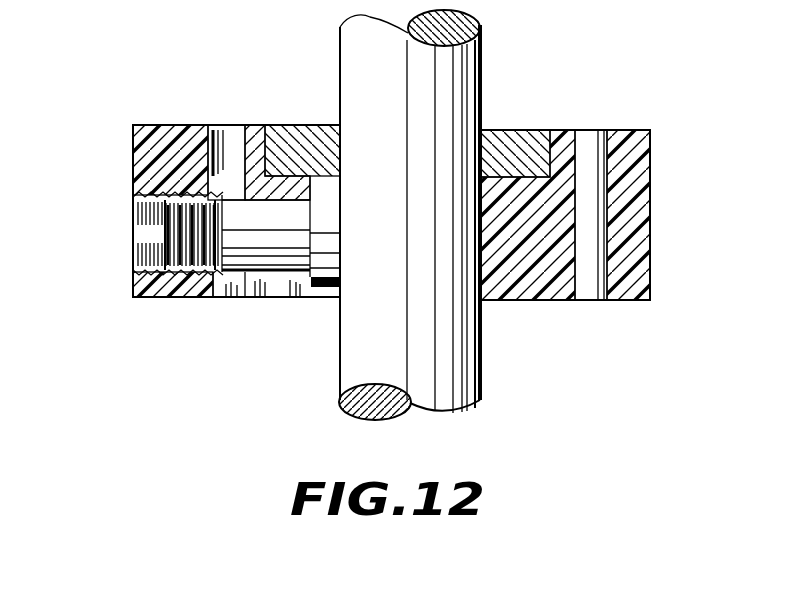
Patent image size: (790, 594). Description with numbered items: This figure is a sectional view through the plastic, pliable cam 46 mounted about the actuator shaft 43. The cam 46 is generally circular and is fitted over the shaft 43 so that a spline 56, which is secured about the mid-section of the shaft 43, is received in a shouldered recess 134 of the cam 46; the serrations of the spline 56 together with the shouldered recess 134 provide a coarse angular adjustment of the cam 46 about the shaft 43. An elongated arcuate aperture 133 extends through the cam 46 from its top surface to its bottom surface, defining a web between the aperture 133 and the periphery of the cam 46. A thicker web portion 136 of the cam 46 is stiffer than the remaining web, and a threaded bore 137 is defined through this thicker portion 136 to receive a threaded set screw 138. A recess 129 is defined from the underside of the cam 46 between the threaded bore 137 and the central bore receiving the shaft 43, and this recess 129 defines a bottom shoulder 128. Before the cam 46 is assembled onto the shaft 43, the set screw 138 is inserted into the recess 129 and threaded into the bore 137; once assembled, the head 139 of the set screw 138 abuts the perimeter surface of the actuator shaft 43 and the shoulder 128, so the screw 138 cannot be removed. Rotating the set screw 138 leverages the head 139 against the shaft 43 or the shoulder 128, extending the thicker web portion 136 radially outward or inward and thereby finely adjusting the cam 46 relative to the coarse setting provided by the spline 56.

The actuator shaft 43 is at (479, 66).
The cam 46 is at (133, 147).
The spline 56 is at (510, 137).
The bottom shoulder 128 is at (302, 173).
The recess 129 is at (230, 283).
The elongated arcuate aperture 133 is at (225, 135).
The shouldered recess 134 is at (273, 173).
The thicker web portion 136 is at (168, 125).
The threaded bore 137 is at (158, 230).
The set screw 138 is at (248, 290).
The head 139 is at (321, 289).